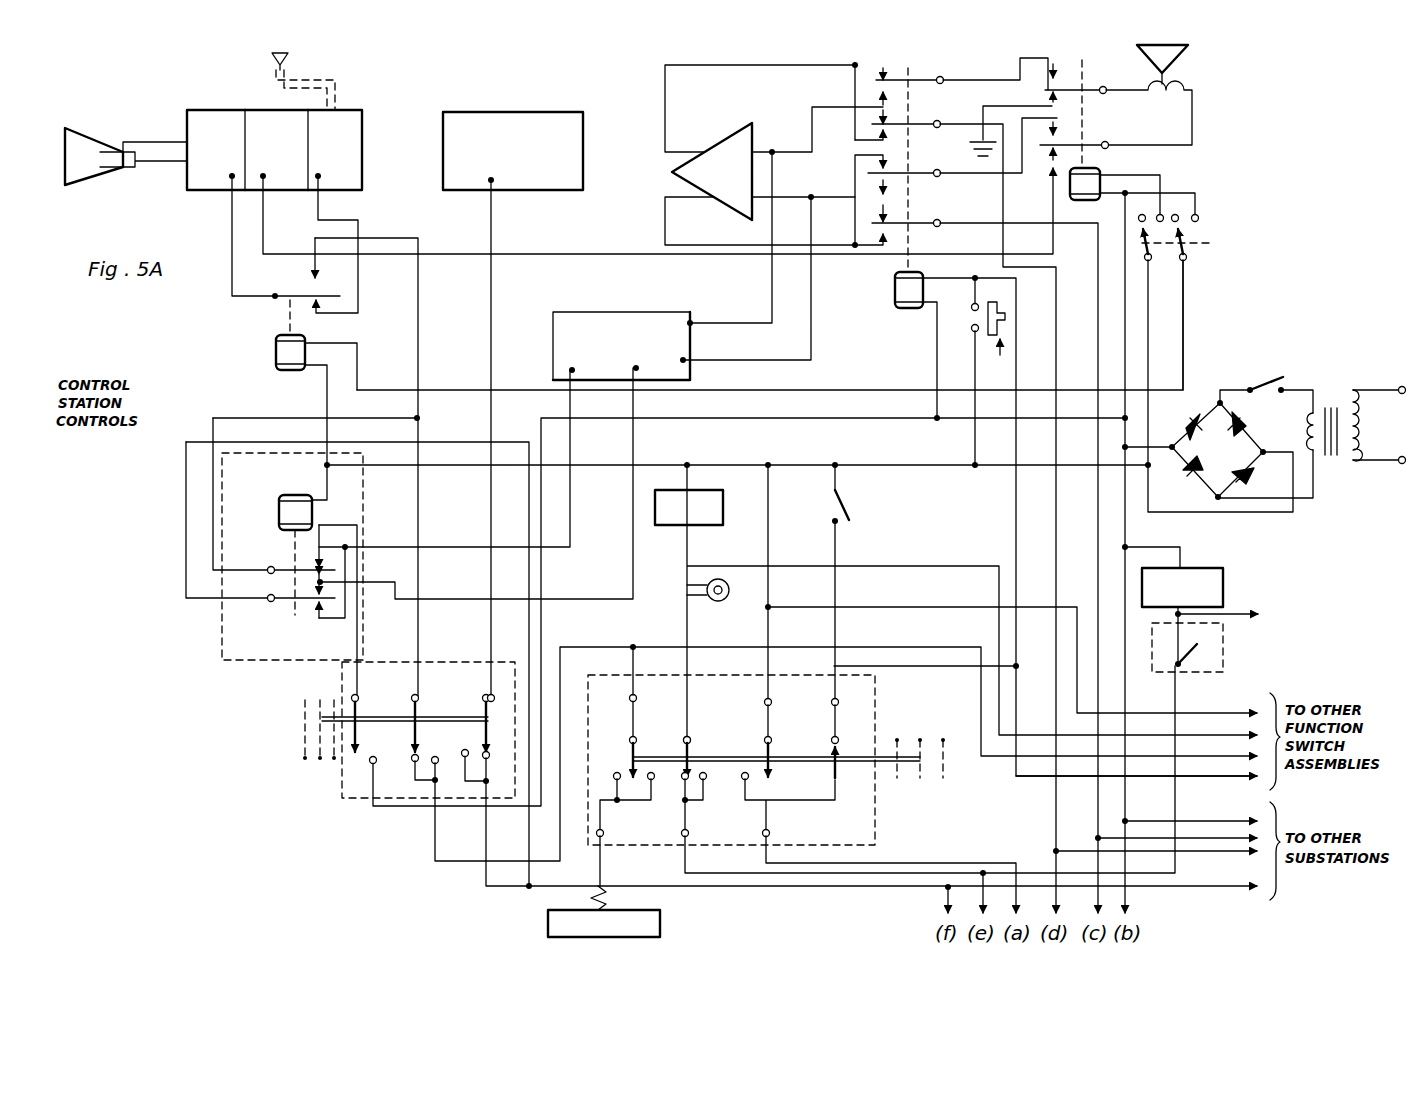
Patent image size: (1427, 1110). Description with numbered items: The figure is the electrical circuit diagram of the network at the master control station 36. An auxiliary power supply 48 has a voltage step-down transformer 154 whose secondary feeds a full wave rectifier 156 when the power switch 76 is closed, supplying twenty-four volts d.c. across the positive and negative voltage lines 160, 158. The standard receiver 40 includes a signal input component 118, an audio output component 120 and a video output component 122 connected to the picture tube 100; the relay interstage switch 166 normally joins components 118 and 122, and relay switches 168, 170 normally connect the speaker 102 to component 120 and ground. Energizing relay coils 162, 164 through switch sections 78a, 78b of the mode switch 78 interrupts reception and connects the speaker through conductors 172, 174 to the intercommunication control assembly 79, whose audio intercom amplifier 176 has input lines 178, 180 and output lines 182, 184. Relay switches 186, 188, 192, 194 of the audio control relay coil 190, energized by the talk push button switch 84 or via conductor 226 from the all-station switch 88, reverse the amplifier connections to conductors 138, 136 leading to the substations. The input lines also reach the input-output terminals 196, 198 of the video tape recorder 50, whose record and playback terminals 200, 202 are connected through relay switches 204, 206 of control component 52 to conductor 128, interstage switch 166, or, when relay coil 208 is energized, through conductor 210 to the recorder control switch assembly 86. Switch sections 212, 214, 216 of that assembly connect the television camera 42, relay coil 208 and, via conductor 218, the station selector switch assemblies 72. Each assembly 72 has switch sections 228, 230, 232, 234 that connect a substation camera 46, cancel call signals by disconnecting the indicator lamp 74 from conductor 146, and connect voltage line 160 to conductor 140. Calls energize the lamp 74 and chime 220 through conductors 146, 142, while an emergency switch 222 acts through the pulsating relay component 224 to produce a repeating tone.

The master control station 36 is at (1260, 195).
The receiver 40 is at (246, 104).
The television camera 42 is at (557, 125).
The television camera 46 is at (661, 913).
The auxiliary power supply 48 is at (1264, 438).
The video tape recorder 50 is at (620, 344).
The control component 52 is at (409, 533).
The station selector switch assembly 72 is at (763, 747).
The indicator lamp 74 is at (729, 598).
The power switch 76 is at (1267, 380).
The mode switch 78 is at (1216, 342).
The switch section 78a is at (1155, 262).
The second switch section 78b is at (1190, 262).
The intercommunication control assembly 79 is at (936, 148).
The talk push button switch 84 is at (990, 373).
The video tape recorder control switch assembly 86 is at (385, 743).
The all-station switch 88 is at (849, 522).
The cathode ray picture tube 100 is at (72, 158).
The audio output speaker 102 is at (1135, 56).
The signal input component 118 is at (355, 142).
The audio output component 120 is at (276, 150).
The video output component 122 is at (210, 122).
The conductor 128 is at (810, 888).
The conductor 136 is at (1098, 278).
The conductor 138 is at (1057, 358).
The conductor 140 is at (980, 861).
The conductor 142 is at (1120, 714).
The conductor 146 is at (900, 880).
The voltage step-down transformer 154 is at (1330, 386).
The full wave rectifier 156 is at (1204, 494).
The negative voltage line 158 is at (870, 420).
The positive voltage line 160 is at (904, 463).
The relay coil 162 is at (278, 350).
The relay coil 164 is at (1090, 173).
The relay interstage switch 166 is at (303, 294).
The relay switch 168 is at (1090, 145).
The relay switch 170 is at (1068, 85).
The conductor 172 is at (985, 176).
The conductor 174 is at (957, 80).
The audio intercom amplifier 176 is at (717, 143).
The signal input line 178 is at (812, 118).
The signal input line 180 is at (843, 197).
The amplified signal output line 182 is at (718, 55).
The amplified signal output line 184 is at (665, 212).
The relay switch 186 is at (918, 80).
The relay switch 188 is at (937, 172).
The audio control relay coil 190 is at (893, 283).
The relay switch 192 is at (937, 122).
The relay switch 194 is at (937, 226).
The input-output terminal 196 is at (690, 322).
The input-output terminal 198 is at (690, 364).
The video record terminal 200 is at (569, 372).
The video playback terminal 202 is at (638, 370).
The relay switch 204 is at (305, 604).
The relay switch 206 is at (286, 568).
The relay coil 208 is at (282, 513).
The conductor 210 is at (416, 506).
The switch section 212 is at (345, 727).
The switch section 214 is at (414, 718).
The switch section 216 is at (486, 698).
The conductor 218 is at (445, 862).
The chime 220 is at (723, 512).
The emergency switch 222 is at (1190, 648).
The pulsating relay component 224 is at (1200, 588).
The conductor 226 is at (1016, 546).
The switch section 228 is at (630, 755).
The switch section 230 is at (683, 740).
The switch section 232 is at (762, 740).
The switch section 234 is at (833, 768).